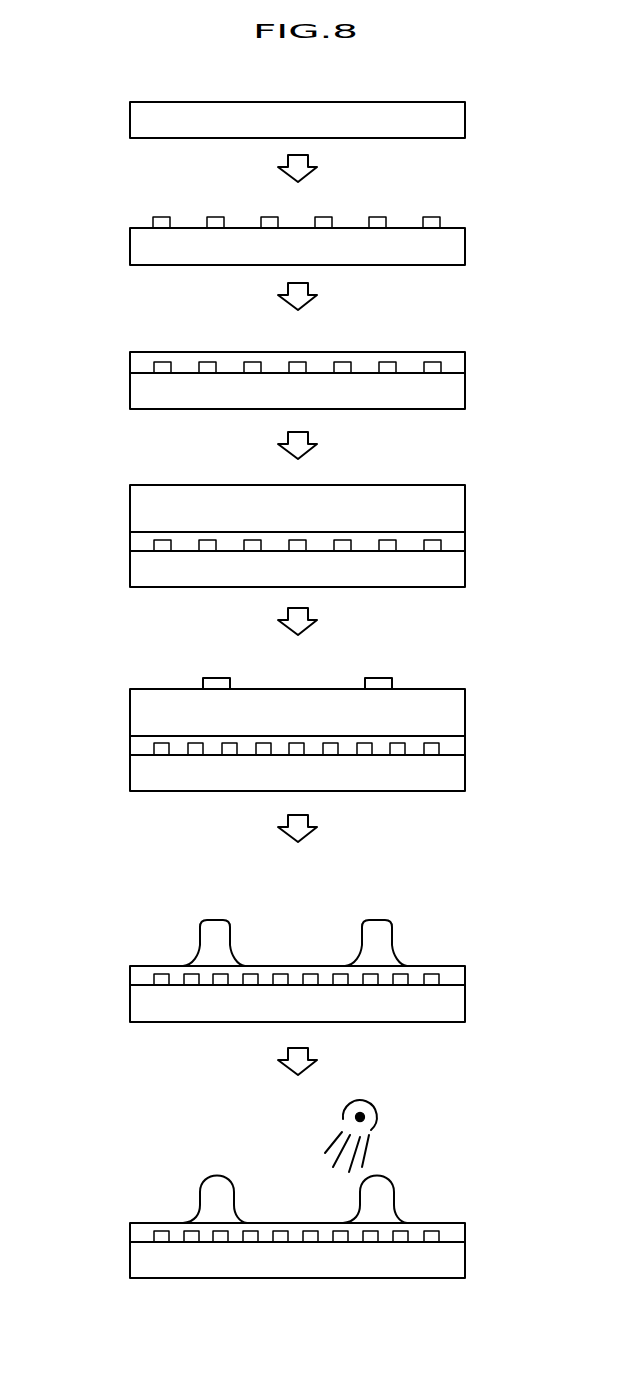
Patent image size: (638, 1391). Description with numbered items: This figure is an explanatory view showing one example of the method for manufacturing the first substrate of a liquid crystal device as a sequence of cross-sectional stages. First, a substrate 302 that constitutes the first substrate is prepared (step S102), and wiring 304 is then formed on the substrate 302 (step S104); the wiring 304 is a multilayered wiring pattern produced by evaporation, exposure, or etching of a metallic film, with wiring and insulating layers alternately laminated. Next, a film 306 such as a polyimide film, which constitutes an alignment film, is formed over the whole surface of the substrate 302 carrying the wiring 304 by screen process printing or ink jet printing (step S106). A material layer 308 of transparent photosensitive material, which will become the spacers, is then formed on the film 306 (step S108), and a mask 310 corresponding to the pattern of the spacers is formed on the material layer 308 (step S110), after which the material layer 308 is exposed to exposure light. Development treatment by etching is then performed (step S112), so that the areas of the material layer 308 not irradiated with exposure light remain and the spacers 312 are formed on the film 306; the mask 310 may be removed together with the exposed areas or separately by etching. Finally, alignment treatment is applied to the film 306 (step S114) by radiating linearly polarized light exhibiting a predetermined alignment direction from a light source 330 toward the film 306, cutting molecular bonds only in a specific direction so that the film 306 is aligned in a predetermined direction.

The step of preparing substrate S102 is at (90, 73).
The step of forming wiring S104 is at (90, 195).
The step of forming film S106 is at (90, 339).
The step of forming material layer S108 is at (90, 517).
The step of forming mask S110 is at (90, 666).
The step of development treatment S112 is at (90, 883).
The step of alignment treatment S114 is at (90, 1134).
The substrate 302 is at (465, 117).
The wiring 304 is at (440, 222).
The film 306 is at (452, 352).
The material layer 308 is at (465, 510).
The mask 310 is at (393, 683).
The spacers 312 is at (223, 947).
The light source 330 is at (374, 1124).